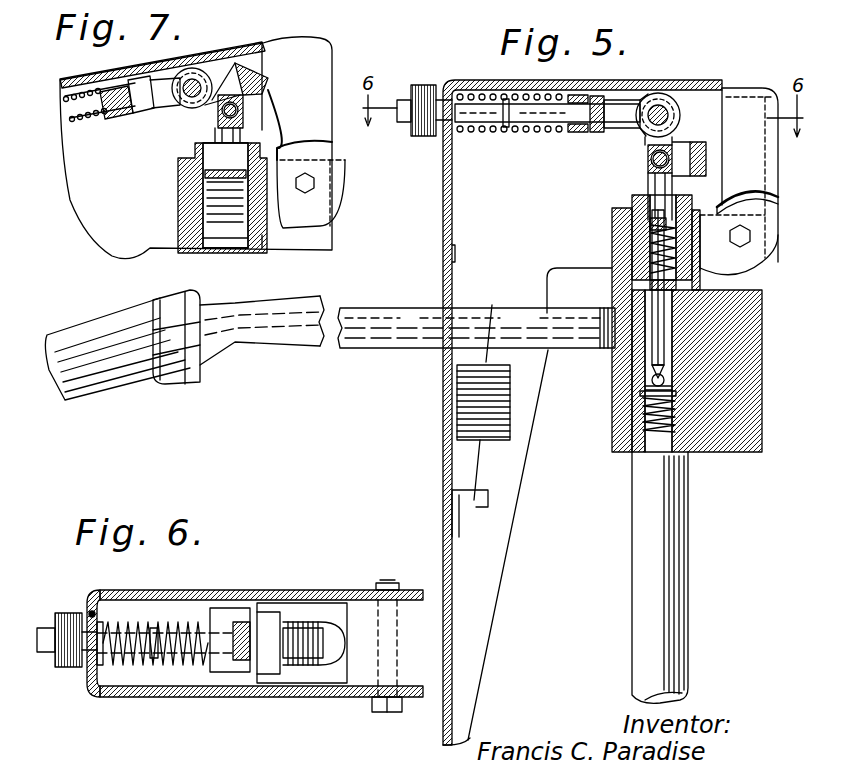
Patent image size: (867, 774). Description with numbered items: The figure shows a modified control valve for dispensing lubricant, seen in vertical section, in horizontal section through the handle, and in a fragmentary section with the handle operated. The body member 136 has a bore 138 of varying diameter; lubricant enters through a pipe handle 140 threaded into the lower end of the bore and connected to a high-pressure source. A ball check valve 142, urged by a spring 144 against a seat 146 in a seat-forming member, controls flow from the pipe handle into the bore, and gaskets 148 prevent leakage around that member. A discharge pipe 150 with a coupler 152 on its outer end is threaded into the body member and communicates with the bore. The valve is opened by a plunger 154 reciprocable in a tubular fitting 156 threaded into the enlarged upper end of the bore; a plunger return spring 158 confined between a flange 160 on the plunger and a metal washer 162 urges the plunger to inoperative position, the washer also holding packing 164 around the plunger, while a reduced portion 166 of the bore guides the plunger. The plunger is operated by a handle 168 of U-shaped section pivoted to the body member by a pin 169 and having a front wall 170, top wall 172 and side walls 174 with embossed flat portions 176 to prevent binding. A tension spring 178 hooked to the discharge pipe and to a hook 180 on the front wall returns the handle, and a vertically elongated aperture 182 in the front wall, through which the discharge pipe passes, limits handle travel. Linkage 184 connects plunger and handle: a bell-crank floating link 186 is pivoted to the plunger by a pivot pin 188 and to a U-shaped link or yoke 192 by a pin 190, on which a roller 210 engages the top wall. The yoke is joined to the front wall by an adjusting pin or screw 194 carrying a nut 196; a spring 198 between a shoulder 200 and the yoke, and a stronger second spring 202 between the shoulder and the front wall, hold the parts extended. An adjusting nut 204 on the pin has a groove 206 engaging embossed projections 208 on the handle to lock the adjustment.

In FIG. 5, the body member 136 is at (740, 402).
In FIG. 5, the bore 138 is at (664, 360).
In FIG. 5, the pipe handle 140 is at (682, 548).
In FIG. 5, the ball check valve 142 is at (665, 380).
In FIG. 5, the spring 144 is at (678, 414).
In FIG. 5, the seat 146 is at (674, 387).
In FIG. 5, the gaskets 148 is at (642, 400).
In FIG. 5, the discharge pipe 150 is at (360, 352).
In FIG. 5, the coupler 152 is at (135, 393).
In FIG. 5, the plunger 154 is at (668, 332).
In FIG. 5, the tubular fitting 156 is at (702, 216).
In FIG. 7, the plunger return spring 158 is at (253, 243).
In FIG. 5, the plunger return spring 158 is at (694, 262).
In FIG. 5, the flange 160 is at (760, 264).
In FIG. 5, the metal washer 162 is at (676, 262).
In FIG. 5, the packing 164 is at (680, 296).
In FIG. 5, the reduced portion 166 is at (612, 302).
In FIG. 7, the handle 168 is at (328, 80).
In FIG. 5, the handle 168 is at (495, 595).
In FIG. 7, the pin 169 is at (317, 183).
In FIG. 5, the pin 169 is at (752, 236).
In FIG. 6, the pin 169 is at (400, 712).
In FIG. 5, the front wall 170 is at (441, 434).
In FIG. 6, the front wall 170 is at (88, 680).
In FIG. 5, the top wall 172 is at (712, 86).
In FIG. 6, the side walls 174 is at (203, 590).
In FIG. 5, the embossed flat portions 176 is at (772, 205).
In FIG. 6, the embossed flat portions 176 is at (410, 563).
In FIG. 5, the tension spring 178 is at (495, 440).
In FIG. 5, the hook 180 is at (458, 524).
In FIG. 5, the aperture 182 is at (456, 258).
In FIG. 5, the linkage 184 is at (645, 96).
In FIG. 7, the floating link 186 is at (240, 87).
In FIG. 5, the floating link 186 is at (706, 160).
In FIG. 6, the floating link 186 is at (348, 645).
In FIG. 7, the pivot pin 188 is at (240, 123).
In FIG. 5, the pivot pin 188 is at (648, 160).
In FIG. 7, the pin 190 is at (205, 70).
In FIG. 5, the pin 190 is at (680, 108).
In FIG. 7, the link or yoke 192 is at (155, 85).
In FIG. 5, the link or yoke 192 is at (620, 129).
In FIG. 6, the link or yoke 192 is at (247, 672).
In FIG. 7, the adjusting pin or screw 194 is at (78, 103).
In FIG. 5, the adjusting pin or screw 194 is at (527, 107).
In FIG. 6, the adjusting pin or screw 194 is at (167, 630).
In FIG. 7, the nut 196 is at (143, 116).
In FIG. 5, the nut 196 is at (596, 133).
In FIG. 6, the nut 196 is at (240, 620).
In FIG. 7, the spring 198 is at (82, 118).
In FIG. 5, the spring 198 is at (548, 133).
In FIG. 6, the spring 198 is at (168, 670).
In FIG. 5, the shoulder 200 is at (508, 96).
In FIG. 6, the shoulder 200 is at (152, 660).
In FIG. 5, the second spring 202 is at (486, 133).
In FIG. 6, the second spring 202 is at (130, 660).
In FIG. 5, the adjusting nut 204 is at (404, 123).
In FIG. 6, the adjusting nut 204 is at (65, 668).
In FIG. 5, the groove 206 is at (426, 137).
In FIG. 6, the groove 206 is at (76, 640).
In FIG. 6, the embossed projections 208 is at (89, 614).
In FIG. 5, the roller 210 is at (668, 120).
In FIG. 6, the roller 210 is at (345, 640).